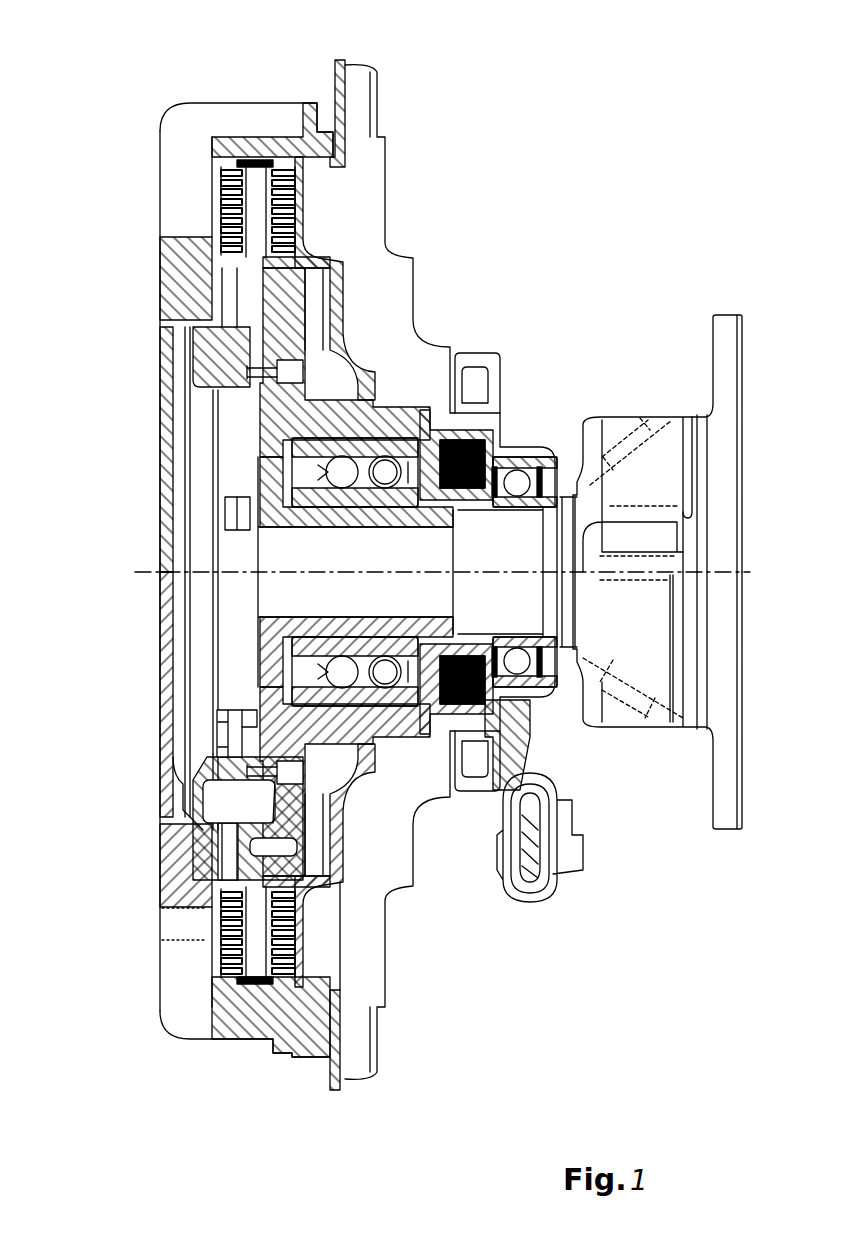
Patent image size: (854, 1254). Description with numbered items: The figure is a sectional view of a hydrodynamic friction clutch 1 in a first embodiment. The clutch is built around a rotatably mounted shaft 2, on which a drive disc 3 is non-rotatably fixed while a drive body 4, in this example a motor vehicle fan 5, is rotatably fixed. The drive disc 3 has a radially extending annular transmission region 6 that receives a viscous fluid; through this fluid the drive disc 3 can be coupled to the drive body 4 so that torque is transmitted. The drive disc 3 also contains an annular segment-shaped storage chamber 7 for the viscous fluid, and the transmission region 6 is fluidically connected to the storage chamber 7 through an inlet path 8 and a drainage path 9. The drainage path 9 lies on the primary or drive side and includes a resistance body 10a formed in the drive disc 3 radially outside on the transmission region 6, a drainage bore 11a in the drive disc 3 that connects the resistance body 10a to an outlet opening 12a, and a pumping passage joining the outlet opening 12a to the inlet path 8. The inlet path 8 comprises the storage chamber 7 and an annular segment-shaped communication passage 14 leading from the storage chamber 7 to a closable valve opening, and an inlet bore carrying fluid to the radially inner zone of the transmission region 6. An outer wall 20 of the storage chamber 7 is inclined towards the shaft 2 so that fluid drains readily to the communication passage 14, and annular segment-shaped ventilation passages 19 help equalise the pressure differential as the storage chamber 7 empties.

The hydrodynamic friction clutch 1 is at (399, 547).
The shaft 2 is at (287, 558).
The drive disc 3 is at (228, 358).
The drive body 4 is at (543, 572).
The motor vehicle fan 5 is at (362, 193).
The transmission region 6 is at (307, 232).
The storage chamber 7 is at (250, 795).
The inlet path 8 is at (284, 869).
The drainage path 9 is at (308, 557).
The resistance body 10a is at (240, 158).
The drainage bore 11a is at (263, 206).
The outlet opening 12a is at (297, 371).
The communication passage 14 is at (300, 853).
The ventilation passages 19 is at (240, 745).
The outer wall 20 is at (285, 798).